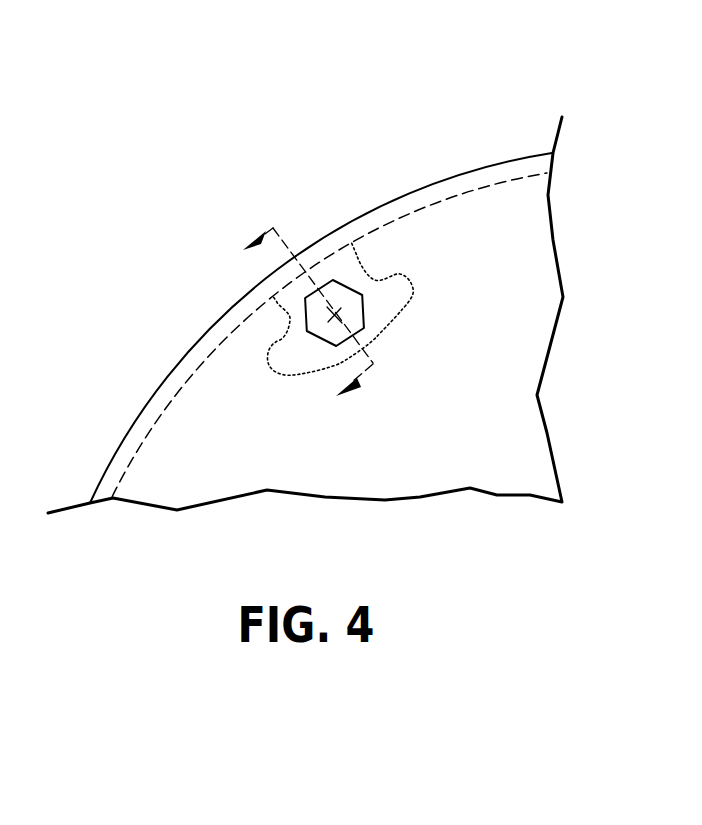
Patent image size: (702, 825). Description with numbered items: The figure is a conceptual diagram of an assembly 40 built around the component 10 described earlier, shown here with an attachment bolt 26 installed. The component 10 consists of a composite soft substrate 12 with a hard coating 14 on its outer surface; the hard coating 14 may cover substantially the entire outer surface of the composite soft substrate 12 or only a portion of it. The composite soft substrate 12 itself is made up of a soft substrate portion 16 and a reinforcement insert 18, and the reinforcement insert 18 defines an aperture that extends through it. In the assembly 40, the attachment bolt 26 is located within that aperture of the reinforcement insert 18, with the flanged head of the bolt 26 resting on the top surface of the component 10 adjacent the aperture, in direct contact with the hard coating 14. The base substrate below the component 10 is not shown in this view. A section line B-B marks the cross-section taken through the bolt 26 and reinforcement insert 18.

The assembly 40 is at (308, 46).
The component 10 is at (210, 167).
The composite soft substrate 12 is at (452, 408).
The hard coating 14 is at (160, 403).
The soft substrate portion 16 is at (512, 203).
The reinforcement insert 18 is at (413, 290).
The attachment bolt 26 is at (308, 333).